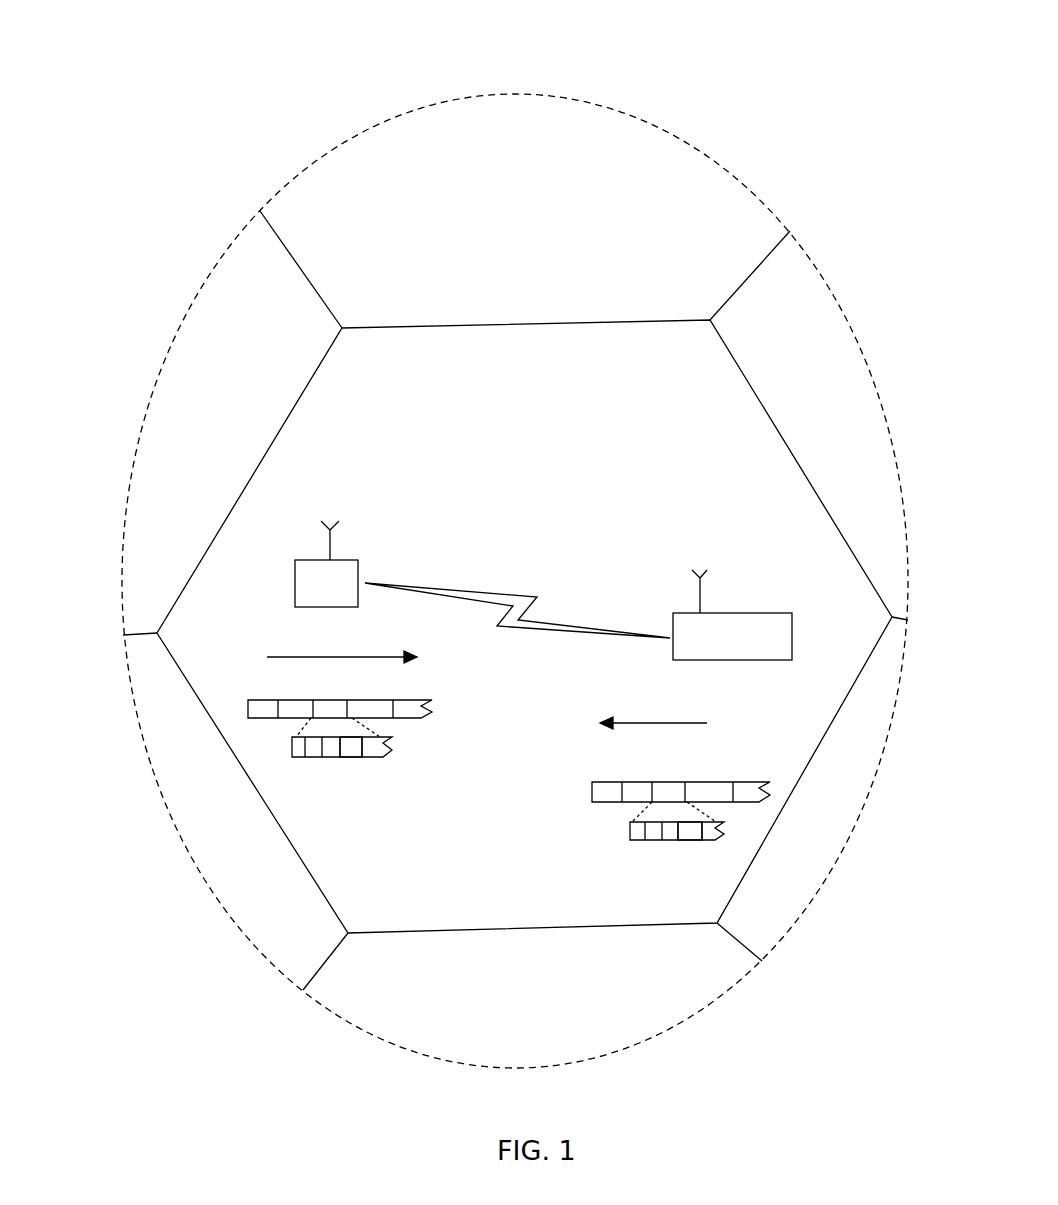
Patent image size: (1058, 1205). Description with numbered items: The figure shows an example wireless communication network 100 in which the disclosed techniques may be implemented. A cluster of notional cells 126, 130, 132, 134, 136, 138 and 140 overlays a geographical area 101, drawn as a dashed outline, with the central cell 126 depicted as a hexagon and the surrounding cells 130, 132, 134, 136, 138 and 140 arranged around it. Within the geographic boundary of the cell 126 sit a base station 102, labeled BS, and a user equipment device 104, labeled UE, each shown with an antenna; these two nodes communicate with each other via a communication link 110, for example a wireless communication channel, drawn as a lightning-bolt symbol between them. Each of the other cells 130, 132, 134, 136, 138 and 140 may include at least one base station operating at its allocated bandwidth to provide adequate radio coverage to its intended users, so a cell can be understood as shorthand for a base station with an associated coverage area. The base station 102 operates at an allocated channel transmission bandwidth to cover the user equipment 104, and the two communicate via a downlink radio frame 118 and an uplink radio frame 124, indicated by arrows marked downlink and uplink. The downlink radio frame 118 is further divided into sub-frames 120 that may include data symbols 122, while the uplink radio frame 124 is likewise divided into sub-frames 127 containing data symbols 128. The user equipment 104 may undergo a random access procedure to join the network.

The wireless communication network 100 is at (452, 52).
The geographical area 101 is at (668, 123).
The base station 102 is at (295, 577).
The user equipment device 104 is at (757, 613).
The communication link 110 is at (513, 587).
The downlink radio frame 118 is at (248, 710).
The sub-frame 120 is at (290, 743).
The data symbol 122 is at (350, 743).
The uplink radio frame 124 is at (735, 770).
The cell 126 is at (383, 390).
The sub-frame 127 is at (628, 835).
The data symbol 128 is at (690, 828).
The cell 130 is at (215, 287).
The cell 132 is at (357, 160).
The cell 134 is at (815, 308).
The cell 136 is at (782, 893).
The cell 138 is at (398, 1005).
The cell 140 is at (222, 870).